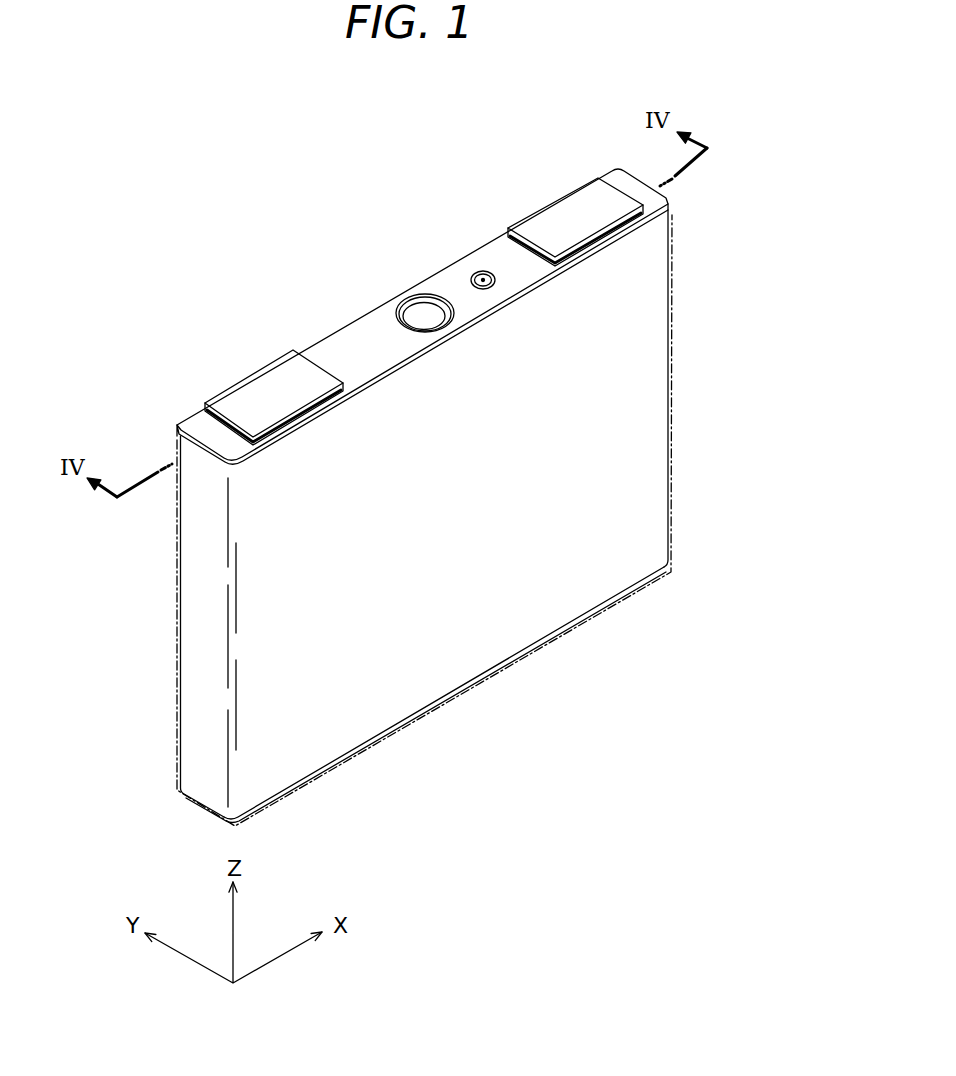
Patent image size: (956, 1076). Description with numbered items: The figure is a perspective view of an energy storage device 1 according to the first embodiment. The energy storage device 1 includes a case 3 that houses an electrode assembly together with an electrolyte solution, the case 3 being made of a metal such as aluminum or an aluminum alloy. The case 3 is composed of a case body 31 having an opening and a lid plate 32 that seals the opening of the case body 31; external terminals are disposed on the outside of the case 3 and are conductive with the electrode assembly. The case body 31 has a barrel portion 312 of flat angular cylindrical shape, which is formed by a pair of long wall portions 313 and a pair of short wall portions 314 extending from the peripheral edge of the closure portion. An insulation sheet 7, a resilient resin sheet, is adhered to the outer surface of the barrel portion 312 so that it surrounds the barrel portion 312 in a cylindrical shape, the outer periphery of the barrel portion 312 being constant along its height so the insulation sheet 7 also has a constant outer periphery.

The energy storage device 1 is at (357, 242).
The case 3 is at (779, 255).
The case body 31 is at (650, 370).
The lid plate 32 is at (666, 182).
The barrel portion 312 is at (203, 745).
The long wall portions 313 is at (293, 737).
The short wall portions 314 is at (200, 628).
The insulation sheet 7 is at (487, 628).